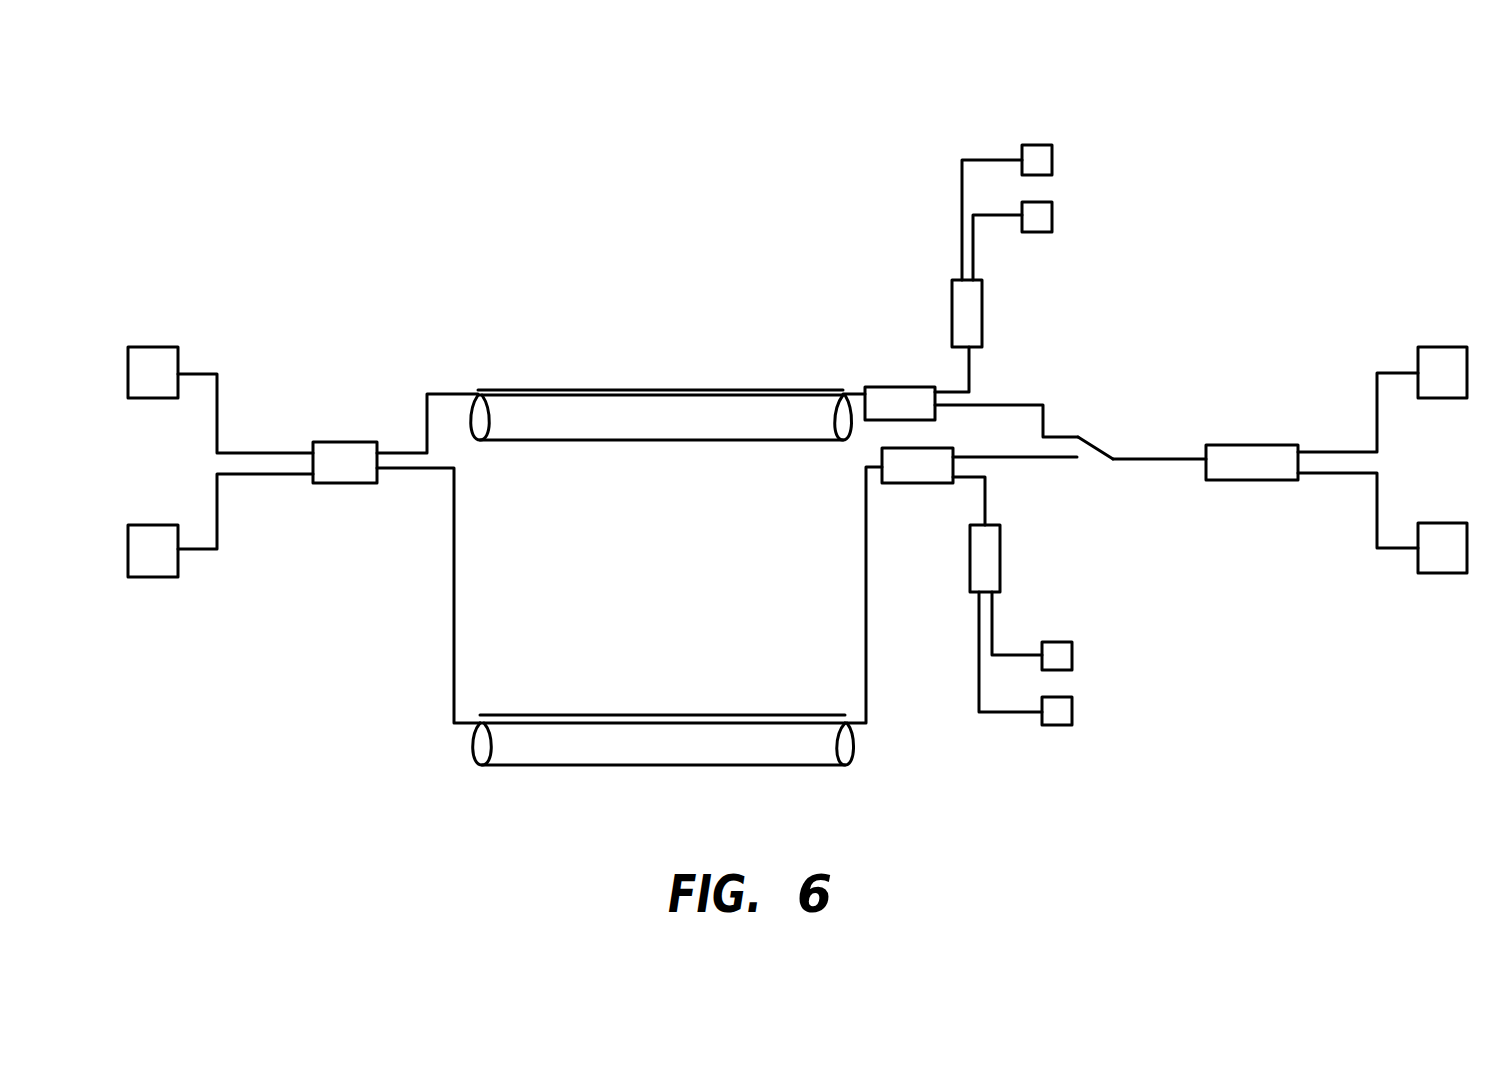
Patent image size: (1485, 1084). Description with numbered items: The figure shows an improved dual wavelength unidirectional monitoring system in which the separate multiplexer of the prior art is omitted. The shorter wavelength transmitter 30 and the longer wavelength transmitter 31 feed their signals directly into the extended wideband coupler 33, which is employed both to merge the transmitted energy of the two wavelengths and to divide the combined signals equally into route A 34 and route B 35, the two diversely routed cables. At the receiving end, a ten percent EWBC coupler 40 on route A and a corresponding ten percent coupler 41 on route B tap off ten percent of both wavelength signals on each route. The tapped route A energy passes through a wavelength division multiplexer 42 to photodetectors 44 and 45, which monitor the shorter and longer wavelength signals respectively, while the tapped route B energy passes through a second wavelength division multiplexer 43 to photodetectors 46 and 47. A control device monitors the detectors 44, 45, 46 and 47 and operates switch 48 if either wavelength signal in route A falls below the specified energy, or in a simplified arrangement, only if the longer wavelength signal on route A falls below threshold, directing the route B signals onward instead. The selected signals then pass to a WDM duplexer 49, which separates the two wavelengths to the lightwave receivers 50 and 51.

The 1300 nm transmitter 30 is at (148, 346).
The 1550 nm transmitter 31 is at (150, 578).
The extended wideband coupler 33 is at (345, 444).
The route A 34 is at (661, 397).
The route B 35 is at (663, 722).
The 10 percent EWBC coupler 40 is at (900, 385).
The 10 percent EWBC coupler 41 is at (917, 481).
The wave length division multiplexer 42 is at (958, 326).
The wave length division multiplexer 43 is at (976, 580).
The photodetector 44 is at (1040, 144).
The photodetector 45 is at (1036, 233).
The photodetector 46 is at (1058, 641).
The photodetector 47 is at (1054, 726).
The switch 48 is at (1113, 455).
The WDM duplexer 49 is at (1258, 464).
The lightwave receiver 50 is at (1445, 346).
The lightwave receiver 51 is at (1445, 574).